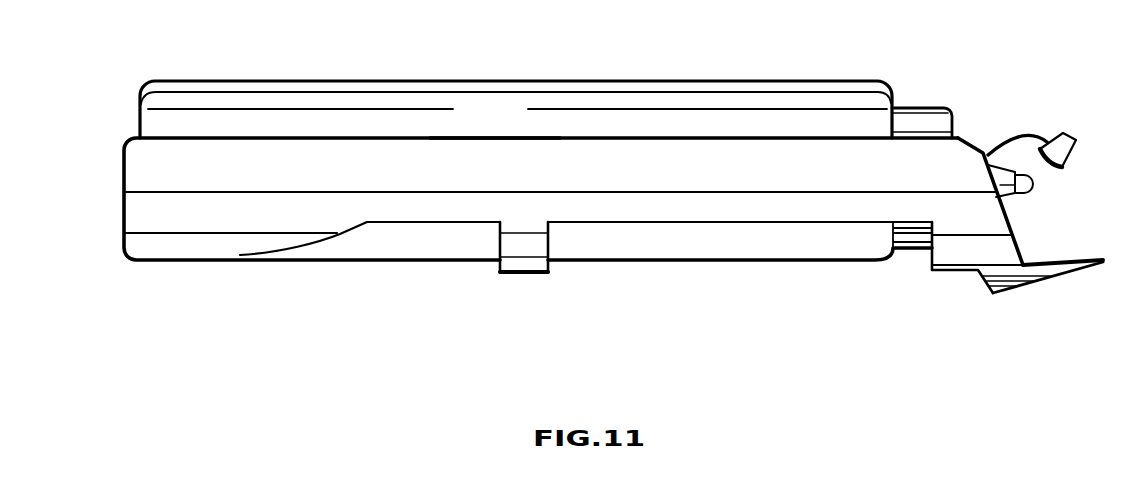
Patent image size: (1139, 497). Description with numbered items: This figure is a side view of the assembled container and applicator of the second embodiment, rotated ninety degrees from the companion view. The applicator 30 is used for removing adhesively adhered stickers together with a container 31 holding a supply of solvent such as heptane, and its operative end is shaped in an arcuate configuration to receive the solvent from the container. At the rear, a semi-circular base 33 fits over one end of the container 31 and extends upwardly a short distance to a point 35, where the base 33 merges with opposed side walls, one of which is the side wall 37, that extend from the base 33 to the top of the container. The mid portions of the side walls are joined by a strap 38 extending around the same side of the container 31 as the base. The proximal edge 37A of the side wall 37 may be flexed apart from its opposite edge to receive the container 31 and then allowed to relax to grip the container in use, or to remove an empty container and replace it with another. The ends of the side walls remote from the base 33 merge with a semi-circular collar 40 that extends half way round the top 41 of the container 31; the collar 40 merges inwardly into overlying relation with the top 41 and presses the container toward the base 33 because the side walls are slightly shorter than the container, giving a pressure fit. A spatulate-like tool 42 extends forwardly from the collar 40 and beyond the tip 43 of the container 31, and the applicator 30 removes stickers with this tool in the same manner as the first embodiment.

The applicator 30 is at (641, 65).
The container 31 is at (767, 95).
The semi-circular base 33 is at (124, 184).
The point 35 is at (242, 253).
The side wall 37 is at (749, 208).
The proximal edge 37A is at (457, 137).
The strap 38 is at (530, 248).
The semi-circular collar 40 is at (953, 257).
The top 41 is at (926, 110).
The spatulate-like tool 42 is at (1060, 273).
The tip 43 is at (1032, 186).